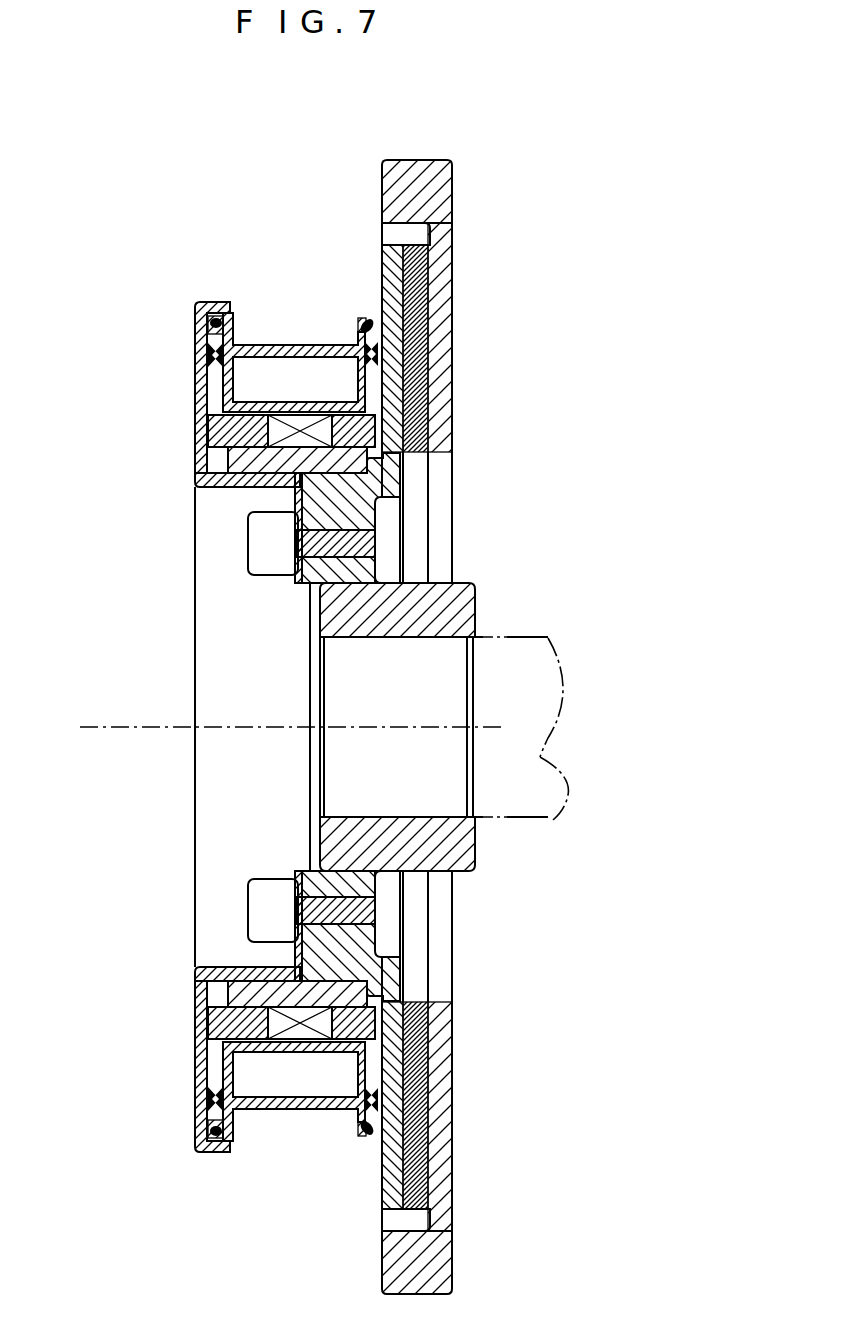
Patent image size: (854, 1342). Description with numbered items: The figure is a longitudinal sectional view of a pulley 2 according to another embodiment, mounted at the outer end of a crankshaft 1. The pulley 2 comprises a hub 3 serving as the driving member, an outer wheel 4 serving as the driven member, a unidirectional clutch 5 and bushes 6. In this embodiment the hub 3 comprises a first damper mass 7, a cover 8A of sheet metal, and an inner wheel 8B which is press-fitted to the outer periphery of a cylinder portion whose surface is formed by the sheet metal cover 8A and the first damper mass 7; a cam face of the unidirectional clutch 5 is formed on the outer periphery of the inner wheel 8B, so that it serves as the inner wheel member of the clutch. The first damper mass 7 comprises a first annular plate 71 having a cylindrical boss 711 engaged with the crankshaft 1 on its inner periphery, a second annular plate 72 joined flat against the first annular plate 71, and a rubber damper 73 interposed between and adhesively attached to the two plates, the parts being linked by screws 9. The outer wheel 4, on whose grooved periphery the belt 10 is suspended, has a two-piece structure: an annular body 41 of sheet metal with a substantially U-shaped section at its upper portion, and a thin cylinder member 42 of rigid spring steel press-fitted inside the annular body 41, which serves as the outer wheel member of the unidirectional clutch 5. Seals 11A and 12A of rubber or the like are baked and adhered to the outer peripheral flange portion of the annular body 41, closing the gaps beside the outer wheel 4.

The crankshaft 1 is at (518, 634).
The pulley 2 is at (128, 263).
The hub 3 is at (178, 446).
The outer wheel 4 is at (332, 230).
The annular body 41 is at (279, 347).
The thin cylinder member 42 is at (318, 400).
The unidirectional clutch 5 is at (250, 484).
The bushes 6 is at (203, 418).
The first damper mass 7 is at (527, 320).
The first annular plate 71 is at (400, 333).
The second annular plate 72 is at (438, 358).
The rubber damper 73 is at (420, 385).
The cylindrical boss 711 is at (462, 584).
The cover 8A is at (230, 475).
The inner wheel 8B is at (243, 463).
The screws 9 is at (272, 567).
The belt 10 is at (288, 1105).
The seal 11A is at (383, 310).
The seal 12A is at (224, 304).